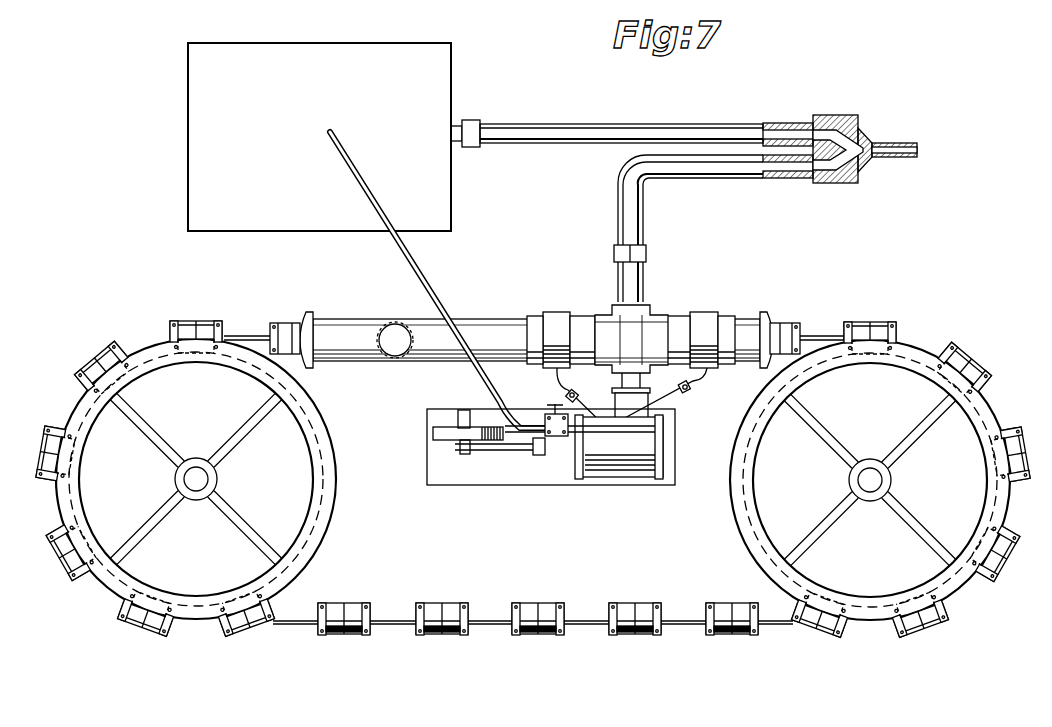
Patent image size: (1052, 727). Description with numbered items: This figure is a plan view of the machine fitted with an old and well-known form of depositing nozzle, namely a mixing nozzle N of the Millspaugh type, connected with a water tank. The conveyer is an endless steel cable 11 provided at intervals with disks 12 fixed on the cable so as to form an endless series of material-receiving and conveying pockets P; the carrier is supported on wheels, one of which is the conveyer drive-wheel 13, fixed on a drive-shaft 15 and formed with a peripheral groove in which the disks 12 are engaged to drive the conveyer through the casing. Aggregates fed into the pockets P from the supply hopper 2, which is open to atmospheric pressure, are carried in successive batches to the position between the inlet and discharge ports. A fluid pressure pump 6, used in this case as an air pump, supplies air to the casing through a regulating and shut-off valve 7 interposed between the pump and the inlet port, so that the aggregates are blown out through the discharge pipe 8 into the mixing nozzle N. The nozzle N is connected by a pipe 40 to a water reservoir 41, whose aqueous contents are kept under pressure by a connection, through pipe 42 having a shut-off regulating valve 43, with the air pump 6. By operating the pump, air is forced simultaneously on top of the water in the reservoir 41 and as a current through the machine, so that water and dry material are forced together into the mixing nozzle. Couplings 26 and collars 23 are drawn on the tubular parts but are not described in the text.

The water reservoir 41 is at (319, 137).
The pipe 40 is at (622, 131).
The mixing nozzle N is at (840, 135).
The discharge pipe 8 is at (644, 230).
The pipe 42 is at (438, 280).
The supply hopper 2 is at (396, 322).
The coupling 26 is at (556, 312).
The collar 23 is at (677, 316).
The regulating and shut-off valve 7 is at (665, 403).
The fluid pressure pump 6 is at (560, 447).
The shut-off regulating valve 43 is at (553, 407).
The conveyer drive-wheel 13 is at (330, 443).
The drive-shaft 15 is at (247, 469).
The endless steel cable 11 is at (812, 330).
The disks 12 is at (430, 603).
The pockets P is at (533, 601).